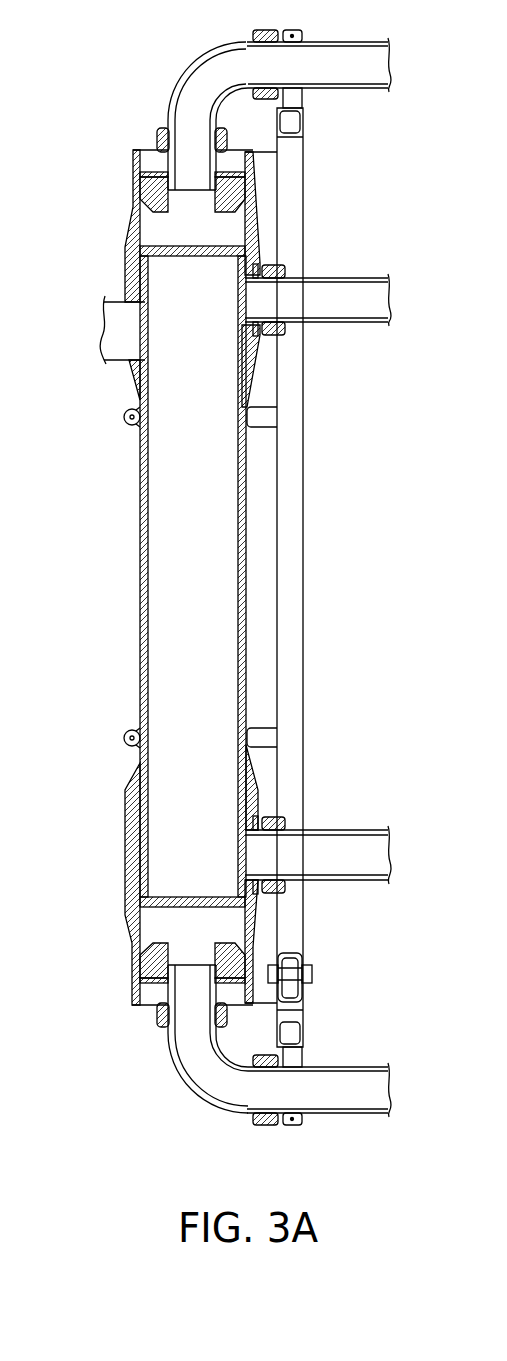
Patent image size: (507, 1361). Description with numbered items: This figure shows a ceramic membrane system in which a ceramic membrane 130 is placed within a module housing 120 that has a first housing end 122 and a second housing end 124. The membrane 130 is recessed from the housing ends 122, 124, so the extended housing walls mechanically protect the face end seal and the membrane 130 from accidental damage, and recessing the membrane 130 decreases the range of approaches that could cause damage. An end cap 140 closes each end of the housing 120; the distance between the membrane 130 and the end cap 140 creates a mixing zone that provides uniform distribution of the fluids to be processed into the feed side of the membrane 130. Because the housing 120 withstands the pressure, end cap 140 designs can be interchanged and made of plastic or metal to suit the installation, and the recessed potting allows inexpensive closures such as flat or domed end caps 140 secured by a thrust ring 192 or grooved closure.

The module housing 120 is at (258, 245).
The first housing end 122 is at (143, 162).
The second housing end 124 is at (134, 980).
The ceramic membrane 130 is at (147, 530).
The end cap 140 is at (232, 196).
The thrust ring 192 is at (250, 952).